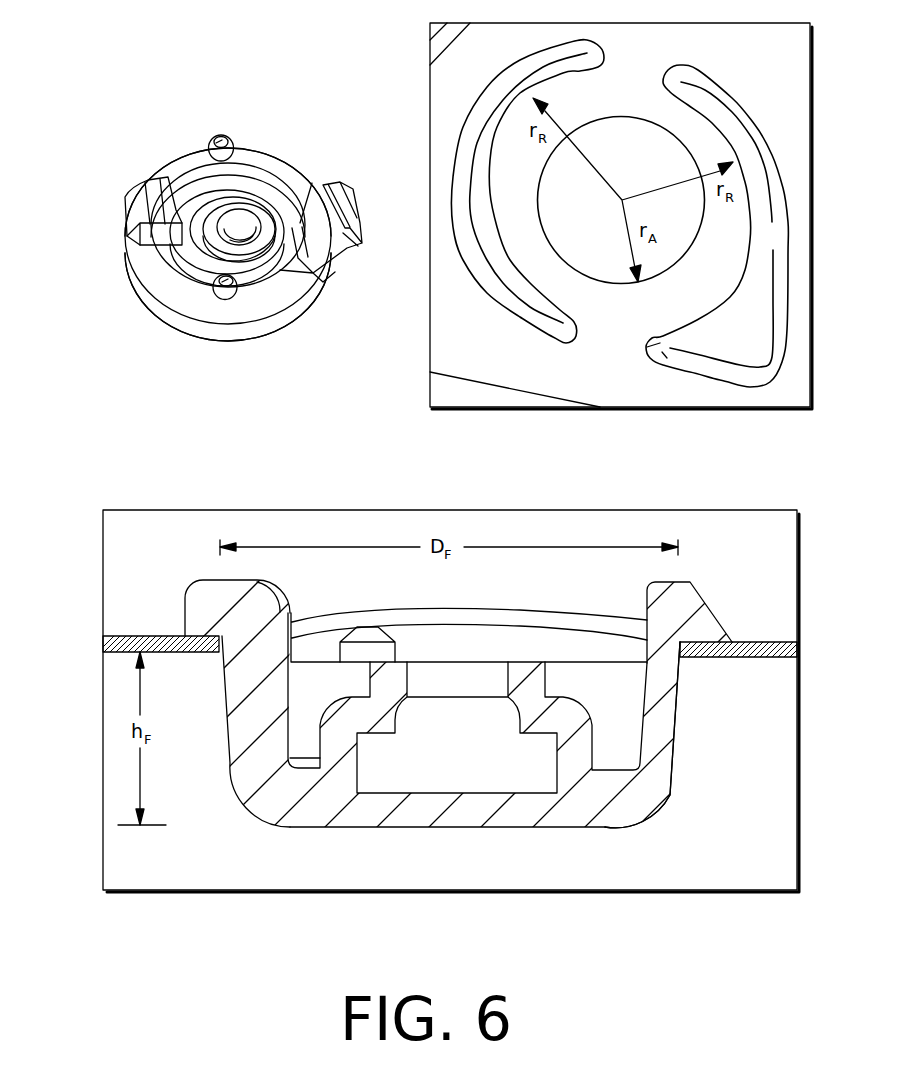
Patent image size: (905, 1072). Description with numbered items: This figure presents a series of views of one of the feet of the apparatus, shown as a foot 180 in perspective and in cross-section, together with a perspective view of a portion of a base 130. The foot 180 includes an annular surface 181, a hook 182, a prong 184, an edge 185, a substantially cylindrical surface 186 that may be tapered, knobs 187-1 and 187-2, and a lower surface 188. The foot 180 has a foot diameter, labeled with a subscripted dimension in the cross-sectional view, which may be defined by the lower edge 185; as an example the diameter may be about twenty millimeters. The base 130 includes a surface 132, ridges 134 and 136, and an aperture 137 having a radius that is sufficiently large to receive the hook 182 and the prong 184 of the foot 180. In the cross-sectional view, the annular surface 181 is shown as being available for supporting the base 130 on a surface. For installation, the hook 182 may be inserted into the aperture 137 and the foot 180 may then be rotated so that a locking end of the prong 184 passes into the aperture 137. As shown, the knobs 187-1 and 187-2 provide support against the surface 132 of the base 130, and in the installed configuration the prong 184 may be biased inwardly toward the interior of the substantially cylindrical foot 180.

The foot 180 is at (298, 103).
The edge 185 is at (160, 160).
The hook 182 is at (148, 197).
The prong 184 is at (347, 237).
The lower surface 188 is at (297, 297).
The substantially cylindrical surface 186 is at (247, 330).
The knob 187-1 is at (217, 297).
The knob 187-2 is at (233, 143).
The annular surface 181 is at (600, 827).
The base 130 is at (473, 355).
The surface 132 is at (628, 108).
The ridge 134 is at (753, 126).
The ridge 136 is at (511, 308).
The aperture 137 is at (583, 273).